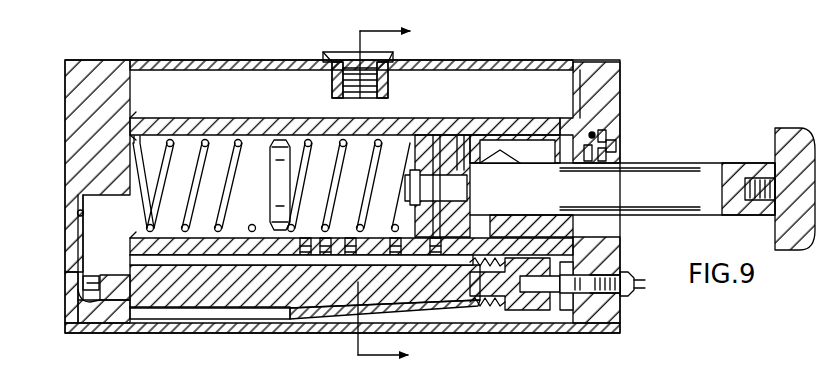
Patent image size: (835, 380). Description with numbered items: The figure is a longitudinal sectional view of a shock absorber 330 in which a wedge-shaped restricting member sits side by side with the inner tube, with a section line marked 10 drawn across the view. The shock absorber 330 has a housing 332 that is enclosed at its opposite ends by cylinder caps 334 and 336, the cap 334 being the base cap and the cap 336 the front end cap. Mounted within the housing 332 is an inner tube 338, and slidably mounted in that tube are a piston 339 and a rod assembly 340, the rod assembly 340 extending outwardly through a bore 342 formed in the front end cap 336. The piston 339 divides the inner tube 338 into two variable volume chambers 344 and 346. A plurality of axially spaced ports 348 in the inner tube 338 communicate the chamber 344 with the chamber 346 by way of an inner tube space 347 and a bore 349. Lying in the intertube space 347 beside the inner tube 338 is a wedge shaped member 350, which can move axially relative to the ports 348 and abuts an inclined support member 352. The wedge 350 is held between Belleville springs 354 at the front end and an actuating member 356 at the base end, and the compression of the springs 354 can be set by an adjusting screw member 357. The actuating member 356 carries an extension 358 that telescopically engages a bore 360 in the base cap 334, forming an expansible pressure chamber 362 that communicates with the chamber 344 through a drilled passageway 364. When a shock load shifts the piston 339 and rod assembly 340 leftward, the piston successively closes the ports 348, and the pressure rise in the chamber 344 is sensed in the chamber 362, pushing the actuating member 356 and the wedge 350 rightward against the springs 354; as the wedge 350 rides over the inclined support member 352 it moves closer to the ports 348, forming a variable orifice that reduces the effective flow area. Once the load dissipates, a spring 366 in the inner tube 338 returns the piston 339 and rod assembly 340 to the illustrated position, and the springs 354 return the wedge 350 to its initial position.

The shock absorber 330 is at (520, 36).
The housing 332 is at (600, 62).
The cylinder cap 334 is at (66, 112).
The cylinder cap 336 is at (620, 100).
The rod assembly 340 is at (716, 149).
The inner tube space 347 is at (323, 75).
The spring 366 is at (232, 162).
The variable volume chamber 344 is at (320, 150).
The inner tube 338 is at (404, 118).
The piston 339 is at (438, 132).
The bore 349 is at (500, 150).
The variable volume chamber 346 is at (517, 151).
The bore 342 is at (531, 226).
The drilled passageway 364 is at (78, 212).
The expansible pressure chamber 362 is at (88, 288).
The bore 360 is at (82, 300).
The extension 358 is at (110, 306).
The actuating member 356 is at (218, 308).
The inclined support member 352 is at (343, 310).
The wedge shaped member 350 is at (424, 300).
The Belleville springs 354 is at (480, 292).
The axially spaced ports 348 is at (314, 260).
The adjusting screw member 357 is at (644, 292).
The section line 10- 10 is at (402, 196).